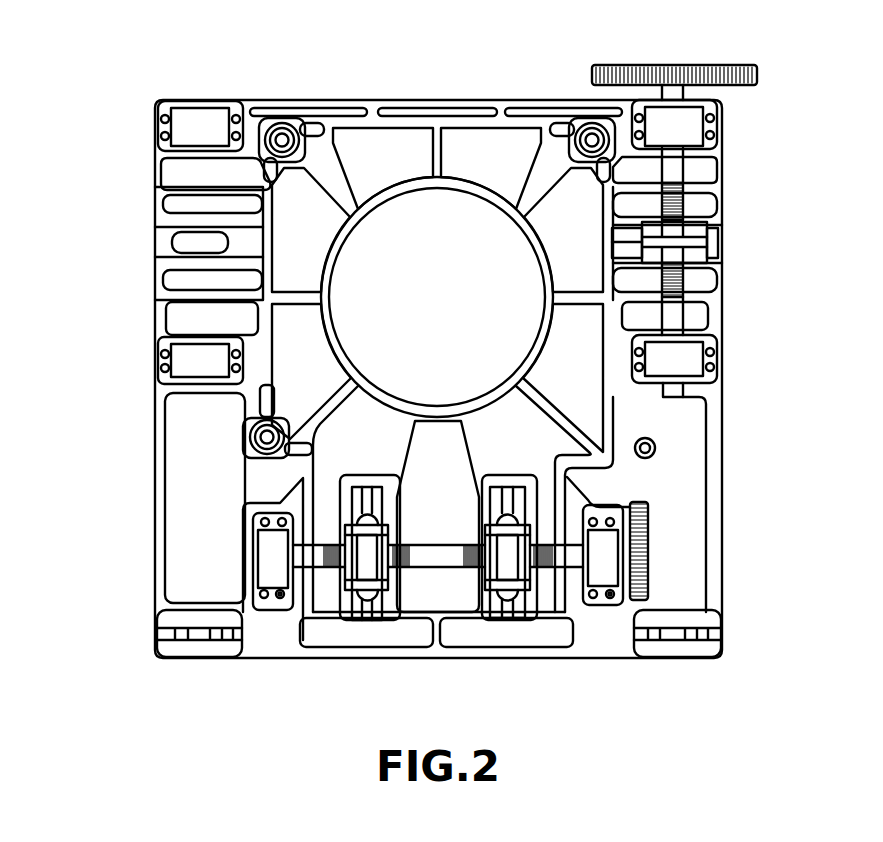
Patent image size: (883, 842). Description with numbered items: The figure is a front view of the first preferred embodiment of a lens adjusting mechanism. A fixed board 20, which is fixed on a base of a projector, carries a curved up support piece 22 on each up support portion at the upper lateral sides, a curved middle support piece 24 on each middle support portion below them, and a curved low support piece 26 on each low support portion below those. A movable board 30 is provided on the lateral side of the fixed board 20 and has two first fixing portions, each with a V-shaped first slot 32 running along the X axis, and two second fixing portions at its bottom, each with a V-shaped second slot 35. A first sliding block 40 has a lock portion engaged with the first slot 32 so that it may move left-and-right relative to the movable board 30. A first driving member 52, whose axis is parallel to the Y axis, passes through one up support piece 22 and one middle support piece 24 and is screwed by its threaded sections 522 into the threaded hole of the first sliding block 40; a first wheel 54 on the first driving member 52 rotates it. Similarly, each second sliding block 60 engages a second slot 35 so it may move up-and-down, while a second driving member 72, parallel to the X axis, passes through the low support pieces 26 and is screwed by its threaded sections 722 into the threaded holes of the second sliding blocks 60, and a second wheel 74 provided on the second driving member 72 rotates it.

The fixed board 20 is at (411, 99).
The curved up support piece 22 is at (186, 118).
The curved middle support piece 24 is at (690, 358).
The curved low support piece 26 is at (270, 572).
The movable board 30 is at (398, 128).
The first slot 32 is at (716, 237).
The second slot 35 is at (375, 614).
The first sliding block 40 is at (701, 258).
The first driving member 52 is at (676, 165).
The threaded section 522 is at (684, 205).
The first wheel 54 is at (757, 78).
The second sliding block 60 is at (491, 584).
The second driving member 72 is at (570, 562).
The threaded section 722 is at (543, 571).
The second wheel 74 is at (649, 530).